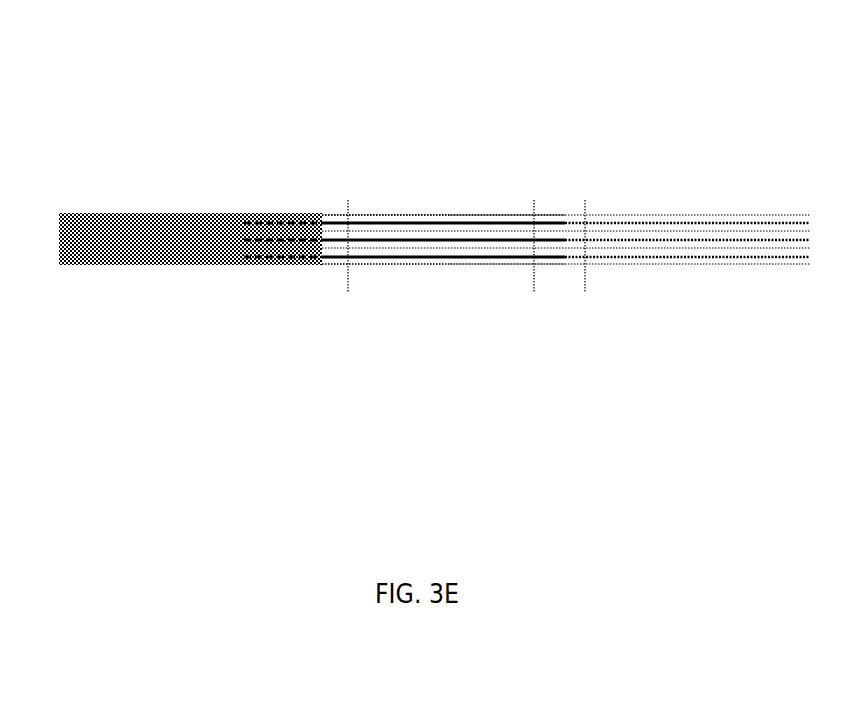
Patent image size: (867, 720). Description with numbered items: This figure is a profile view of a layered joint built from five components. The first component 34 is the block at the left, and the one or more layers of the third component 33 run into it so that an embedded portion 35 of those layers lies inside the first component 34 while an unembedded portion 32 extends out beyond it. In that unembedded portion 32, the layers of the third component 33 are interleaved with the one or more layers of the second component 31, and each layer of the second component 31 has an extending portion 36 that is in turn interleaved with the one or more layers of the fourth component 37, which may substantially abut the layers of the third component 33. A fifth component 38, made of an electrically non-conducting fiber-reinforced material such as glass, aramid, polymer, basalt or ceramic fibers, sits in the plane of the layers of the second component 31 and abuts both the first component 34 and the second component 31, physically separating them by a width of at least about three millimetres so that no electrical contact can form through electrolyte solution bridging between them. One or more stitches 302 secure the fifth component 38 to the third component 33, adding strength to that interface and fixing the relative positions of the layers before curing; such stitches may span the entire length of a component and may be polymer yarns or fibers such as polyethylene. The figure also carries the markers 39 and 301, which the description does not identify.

The second component 31 is at (473, 213).
The unembedded portion 32 is at (511, 200).
The third component 33 is at (425, 257).
The first component 34 is at (142, 220).
The embedded portion 35 is at (288, 217).
The extending portion 36 is at (718, 282).
The fourth component 37 is at (707, 257).
The fifth component 38 is at (338, 218).
The second marking line 39 is at (547, 203).
The third marking line 301 is at (588, 274).
The stitches 302 is at (347, 291).